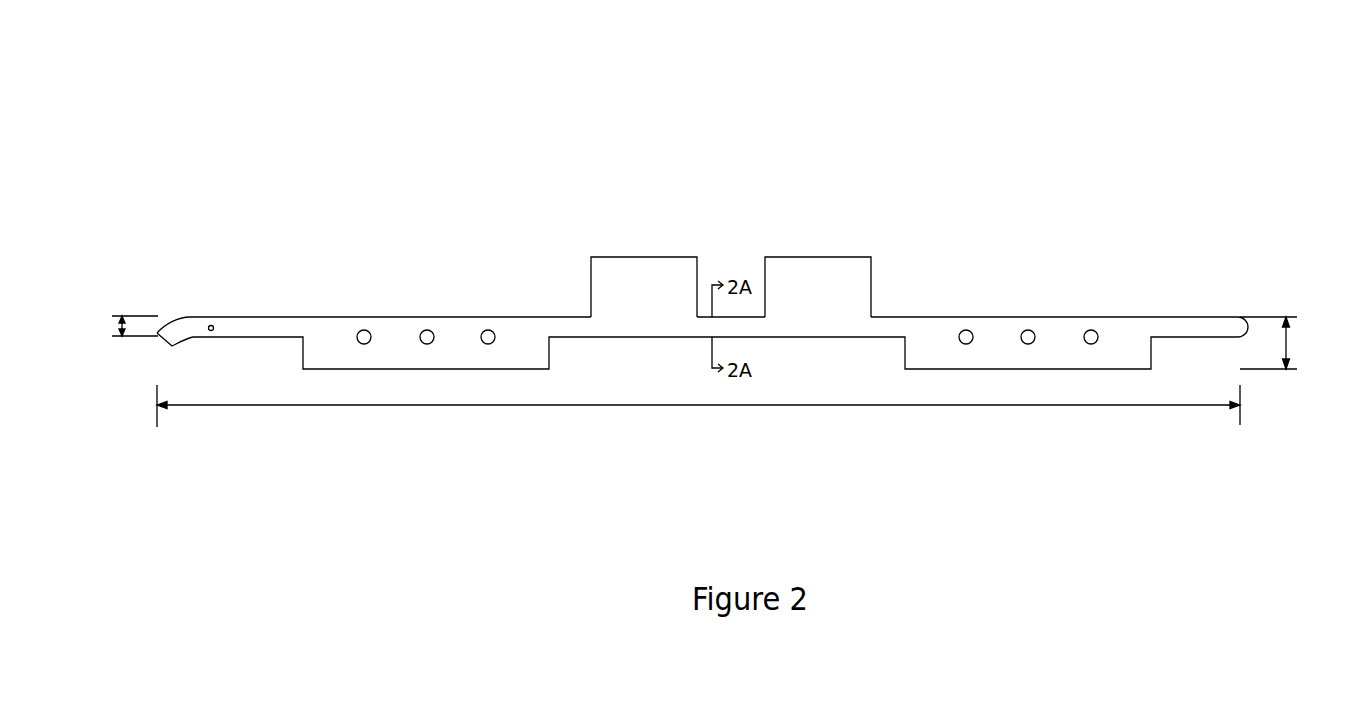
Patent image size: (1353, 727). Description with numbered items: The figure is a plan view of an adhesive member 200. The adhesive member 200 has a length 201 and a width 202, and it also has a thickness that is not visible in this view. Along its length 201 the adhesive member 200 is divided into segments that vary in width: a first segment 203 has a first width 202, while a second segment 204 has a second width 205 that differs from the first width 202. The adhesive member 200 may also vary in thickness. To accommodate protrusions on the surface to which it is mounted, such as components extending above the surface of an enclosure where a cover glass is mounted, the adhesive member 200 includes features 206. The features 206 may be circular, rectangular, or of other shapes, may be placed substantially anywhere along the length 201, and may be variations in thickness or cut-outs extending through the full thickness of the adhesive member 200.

The adhesive member 200 is at (1125, 40).
The length 201 is at (967, 405).
The width 202 is at (1287, 343).
The first segment 203 is at (1090, 268).
The second segment 204 is at (277, 285).
The second width 205 is at (653, 230).
The features 206 is at (491, 330).